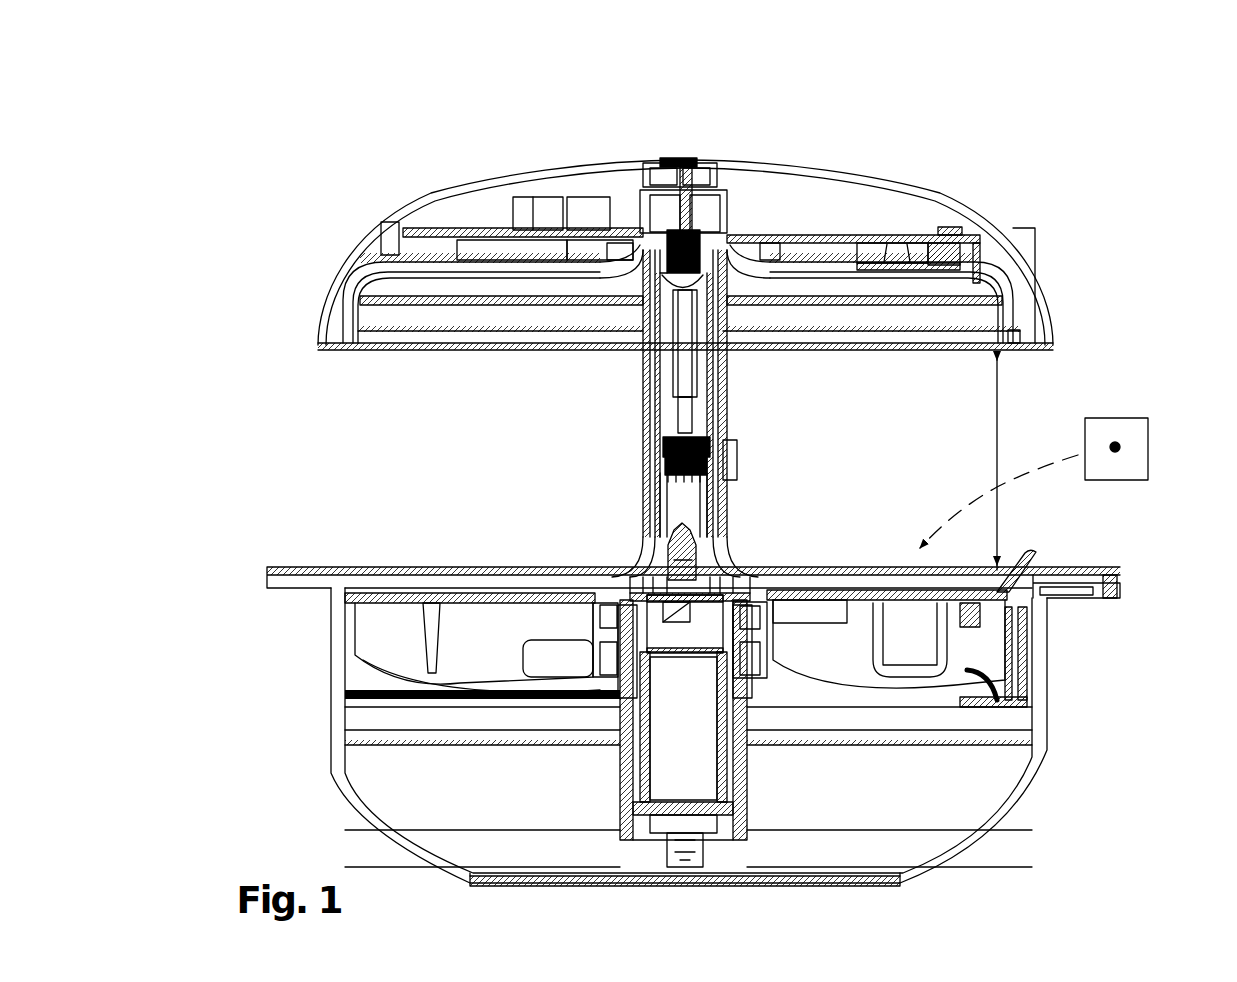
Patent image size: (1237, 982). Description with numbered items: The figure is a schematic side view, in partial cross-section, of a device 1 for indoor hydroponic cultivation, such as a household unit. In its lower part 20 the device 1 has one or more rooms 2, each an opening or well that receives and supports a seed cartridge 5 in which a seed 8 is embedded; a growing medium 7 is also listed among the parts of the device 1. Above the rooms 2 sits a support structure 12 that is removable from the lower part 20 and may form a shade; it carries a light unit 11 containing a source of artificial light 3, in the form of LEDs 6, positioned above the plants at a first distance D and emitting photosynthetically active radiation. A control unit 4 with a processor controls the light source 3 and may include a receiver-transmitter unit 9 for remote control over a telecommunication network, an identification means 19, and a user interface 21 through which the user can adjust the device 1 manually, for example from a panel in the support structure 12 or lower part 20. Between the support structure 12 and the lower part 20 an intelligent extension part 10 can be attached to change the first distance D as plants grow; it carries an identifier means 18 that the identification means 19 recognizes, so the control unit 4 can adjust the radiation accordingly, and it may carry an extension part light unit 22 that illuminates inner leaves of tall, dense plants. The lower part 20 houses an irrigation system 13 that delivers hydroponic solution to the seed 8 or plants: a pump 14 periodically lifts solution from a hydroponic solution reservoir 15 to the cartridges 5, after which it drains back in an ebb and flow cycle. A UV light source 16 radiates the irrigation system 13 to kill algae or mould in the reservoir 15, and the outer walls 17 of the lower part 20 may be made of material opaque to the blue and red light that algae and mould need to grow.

The device 1 is at (705, 143).
The room 2 is at (465, 562).
The source of artificial light 3 is at (497, 350).
The control unit 4 is at (548, 210).
The seed cartridge 5 is at (1137, 452).
The LED 6 is at (893, 224).
The growing medium 7 is at (1100, 453).
The seed 8 is at (1113, 442).
The receiver-transmitter unit 9 is at (583, 200).
The intelligent extension part 10 is at (648, 407).
The light unit 11 is at (1075, 292).
The support structure 12 is at (1014, 237).
The irrigation system 13 is at (580, 628).
The pump 14 is at (693, 760).
The hydroponic solution reservoir 15 is at (547, 808).
The UV light source 16 is at (345, 710).
The outer wall 17 is at (330, 773).
The identifier means 18 is at (638, 450).
The identification means 19 is at (522, 214).
The lower part 20 is at (1048, 822).
The user interface 21 is at (732, 545).
The extension part light unit 22 is at (740, 460).
The first distance D is at (1003, 493).